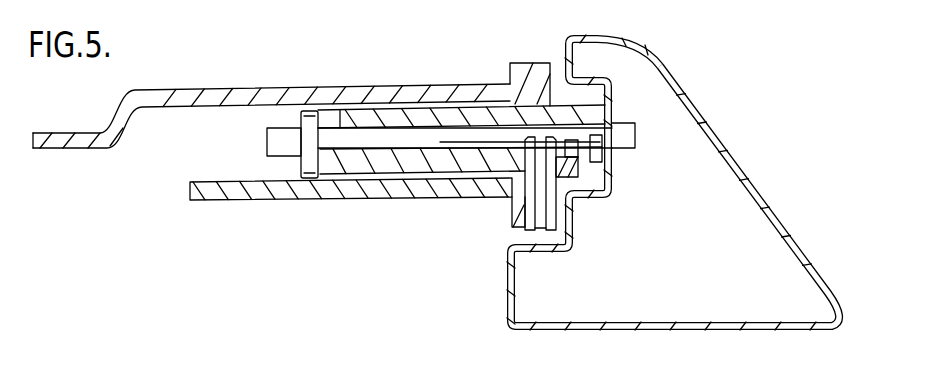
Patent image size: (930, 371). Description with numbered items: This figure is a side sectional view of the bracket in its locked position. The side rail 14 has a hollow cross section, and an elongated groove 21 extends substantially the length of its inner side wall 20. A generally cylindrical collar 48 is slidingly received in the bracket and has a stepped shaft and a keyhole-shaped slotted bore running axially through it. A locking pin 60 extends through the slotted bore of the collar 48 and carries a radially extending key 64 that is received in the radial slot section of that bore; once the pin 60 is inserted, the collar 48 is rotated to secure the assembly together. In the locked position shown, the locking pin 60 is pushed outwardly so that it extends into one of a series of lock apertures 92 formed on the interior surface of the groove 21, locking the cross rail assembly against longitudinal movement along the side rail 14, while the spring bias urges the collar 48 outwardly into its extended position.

The side rail 14 is at (727, 133).
The inner side wall 20 is at (508, 273).
The elongated groove 21 is at (604, 47).
The collar 48 is at (572, 110).
The locking pin 60 is at (345, 133).
The key 64 is at (598, 152).
The lock aperture 92 is at (612, 157).